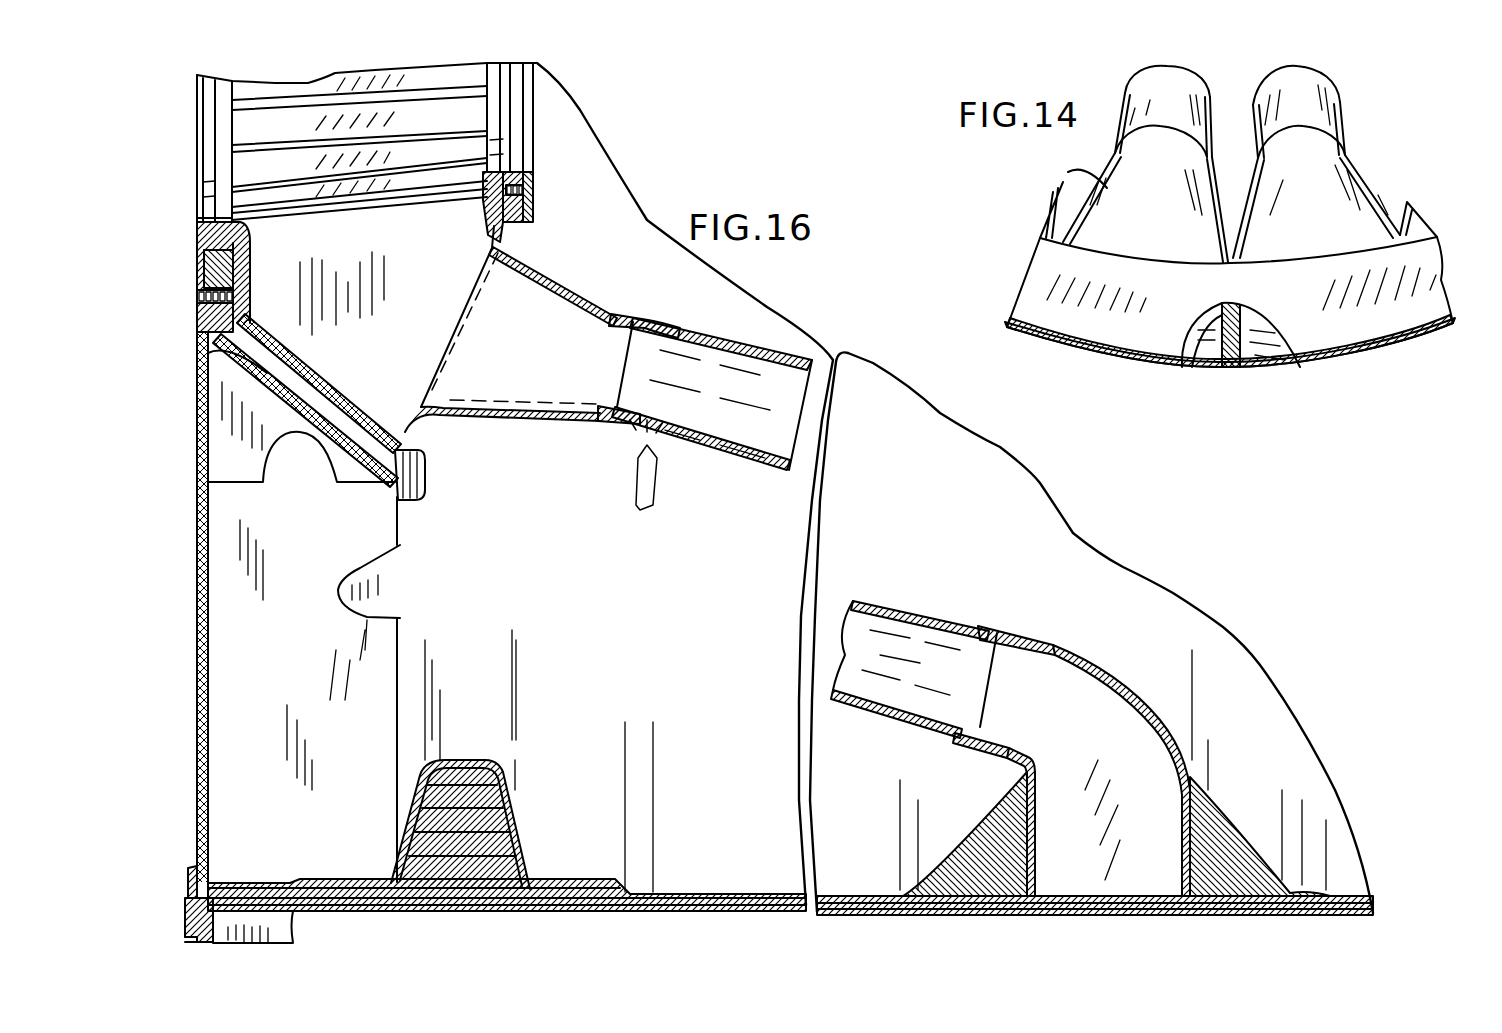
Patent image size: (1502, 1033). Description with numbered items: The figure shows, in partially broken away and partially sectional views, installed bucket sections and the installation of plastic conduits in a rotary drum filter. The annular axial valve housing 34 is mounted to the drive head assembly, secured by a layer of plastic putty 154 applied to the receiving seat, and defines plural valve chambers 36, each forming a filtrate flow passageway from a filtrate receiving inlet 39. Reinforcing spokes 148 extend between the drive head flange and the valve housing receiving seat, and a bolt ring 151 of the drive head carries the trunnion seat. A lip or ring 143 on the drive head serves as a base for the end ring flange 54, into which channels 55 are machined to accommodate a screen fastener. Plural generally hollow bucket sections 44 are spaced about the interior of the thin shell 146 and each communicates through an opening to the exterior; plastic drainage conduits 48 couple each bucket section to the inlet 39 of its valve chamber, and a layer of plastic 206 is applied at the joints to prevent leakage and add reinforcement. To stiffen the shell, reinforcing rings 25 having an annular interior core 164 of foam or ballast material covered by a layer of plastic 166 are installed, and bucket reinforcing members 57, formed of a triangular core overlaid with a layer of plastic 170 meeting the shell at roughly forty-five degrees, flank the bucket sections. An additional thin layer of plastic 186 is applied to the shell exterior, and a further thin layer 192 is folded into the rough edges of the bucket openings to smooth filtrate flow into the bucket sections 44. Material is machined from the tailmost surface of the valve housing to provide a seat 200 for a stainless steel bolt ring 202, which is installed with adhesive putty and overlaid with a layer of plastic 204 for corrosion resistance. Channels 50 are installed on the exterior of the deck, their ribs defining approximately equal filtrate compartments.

In FIG. 16, the reinforcing ring 25 is at (501, 795).
In FIG. 16, the annular axial valve housing 34 is at (548, 124).
In FIG. 16, the valve chamber 36 is at (416, 304).
In FIG. 16, the filtrate receiving inlet 39 is at (562, 282).
In FIG. 16, the bucket section 44 is at (1127, 665).
In FIG. 14, the bucket section 44 is at (1097, 192).
In FIG. 16, the interior drainage conduit 48 is at (777, 348).
In FIG. 16, the channel 50 is at (265, 930).
In FIG. 16, the end ring flange 54 is at (185, 918).
In FIG. 16, the channel in end ring 55 is at (190, 945).
In FIG. 16, the bucket reinforcing member 57 is at (980, 835).
In FIG. 14, the bucket reinforcing member 57 is at (1147, 262).
In FIG. 16, the lip or ring 143 is at (188, 882).
In FIG. 16, the shell 146 is at (685, 894).
In FIG. 14, the shell 146 is at (1170, 345).
In FIG. 16, the reinforcing spoke 148 is at (400, 588).
In FIG. 16, the bolt ring 151 is at (197, 308).
In FIG. 16, the plastic putty layer 154 is at (362, 425).
In FIG. 16, the annular interior core 164 is at (500, 800).
In FIG. 16, the plastic layer 166 is at (525, 830).
In FIG. 14, the plastic layer over bucket stiffening core 170 is at (1316, 297).
In FIG. 16, the additional plastic layer 186 is at (745, 894).
In FIG. 14, the additional plastic layer 186 is at (1116, 355).
In FIG. 16, the thin plastic layer 192 is at (790, 912).
In FIG. 14, the thin plastic layer 192 is at (1228, 360).
In FIG. 16, the seat 200 is at (490, 202).
In FIG. 16, the stainless steel bolt ring 202 is at (538, 209).
In FIG. 16, the plastic layer 204 is at (538, 183).
In FIG. 16, the plastic layer at joints 206 is at (630, 310).